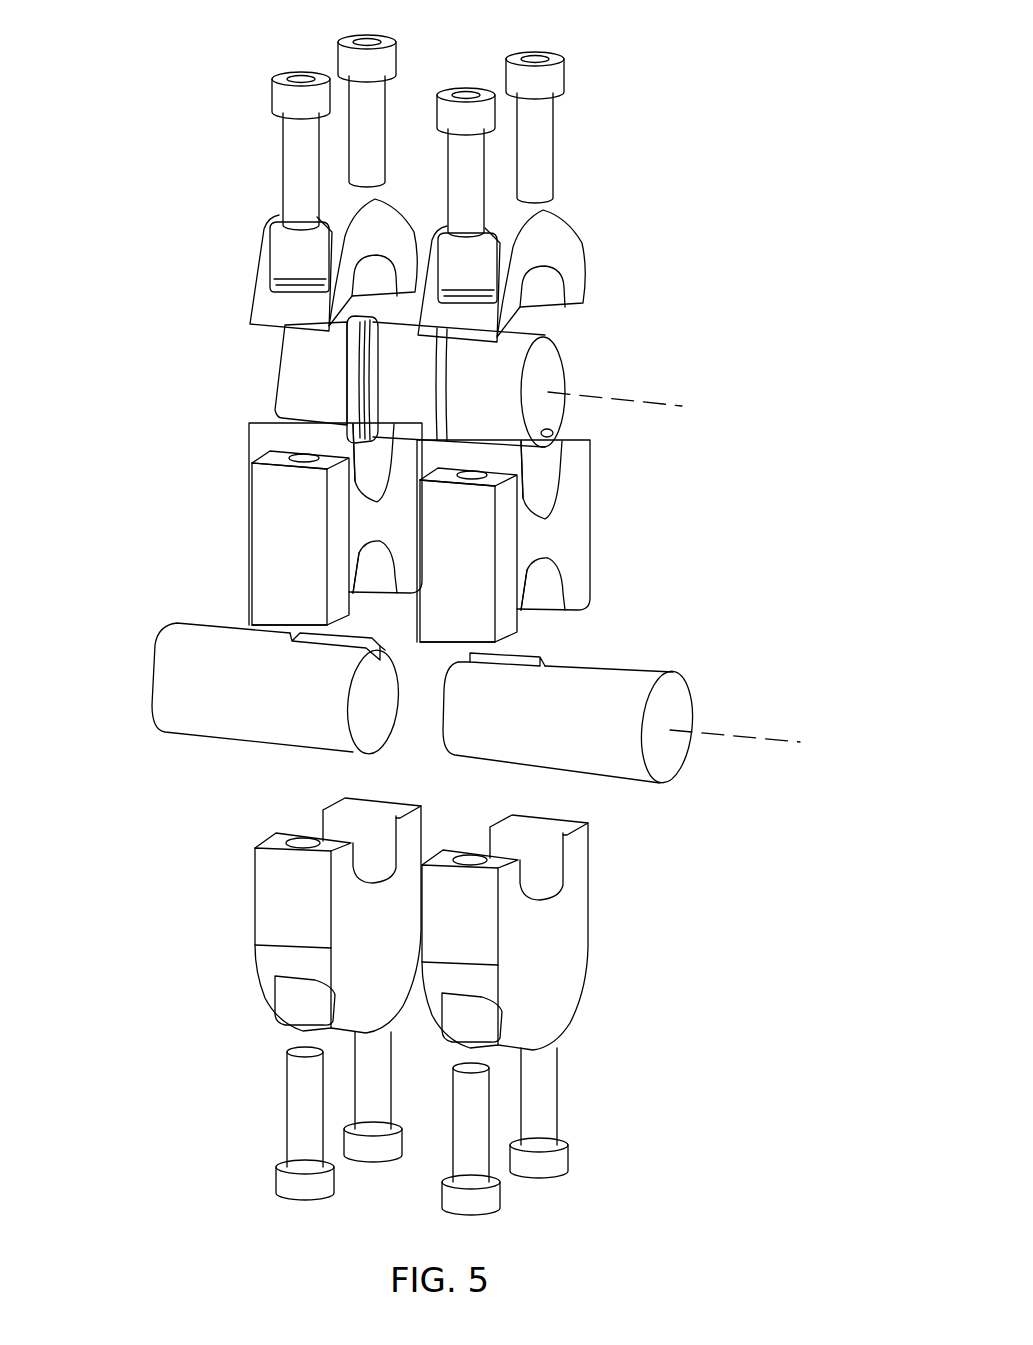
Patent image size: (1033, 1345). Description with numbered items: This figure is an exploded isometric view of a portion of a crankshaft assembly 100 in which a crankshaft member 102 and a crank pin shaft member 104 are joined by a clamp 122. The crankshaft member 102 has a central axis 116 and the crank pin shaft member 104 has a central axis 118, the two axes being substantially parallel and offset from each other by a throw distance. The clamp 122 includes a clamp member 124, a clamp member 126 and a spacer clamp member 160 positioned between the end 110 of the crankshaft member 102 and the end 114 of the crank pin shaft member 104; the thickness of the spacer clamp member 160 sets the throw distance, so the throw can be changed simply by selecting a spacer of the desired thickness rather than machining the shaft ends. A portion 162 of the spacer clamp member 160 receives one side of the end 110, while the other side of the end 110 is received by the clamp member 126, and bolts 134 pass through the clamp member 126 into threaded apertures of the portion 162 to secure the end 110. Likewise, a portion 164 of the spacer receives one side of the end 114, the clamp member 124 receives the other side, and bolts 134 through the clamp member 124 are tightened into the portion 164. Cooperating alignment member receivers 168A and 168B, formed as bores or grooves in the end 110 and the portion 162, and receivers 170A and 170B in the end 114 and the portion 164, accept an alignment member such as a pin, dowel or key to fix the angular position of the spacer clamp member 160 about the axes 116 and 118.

The crankshaft assembly 100 is at (156, 63).
The crankshaft member 102 is at (413, 707).
The crank pin shaft member 104 is at (433, 381).
The end of the crankshaft member 110 is at (349, 745).
The end of the crank pin shaft member 114 is at (560, 358).
The central axis of the crankshaft member 116 is at (781, 740).
The central axis of the crank pin shaft member 118 is at (666, 403).
The clamp 122 is at (413, 251).
The clamp member 124 is at (414, 266).
The clamp member 126 is at (266, 965).
The bolts 134 is at (340, 56).
The spacer clamp member 160 is at (413, 550).
The portion of the spacer clamp member 162 is at (583, 597).
The portion of the spacer clamp member 164 is at (260, 475).
The alignment member receiver 168A is at (357, 642).
The alignment member receiver 168B is at (372, 556).
The alignment member receiver 170A is at (553, 433).
The alignment member receiver 170B is at (370, 511).